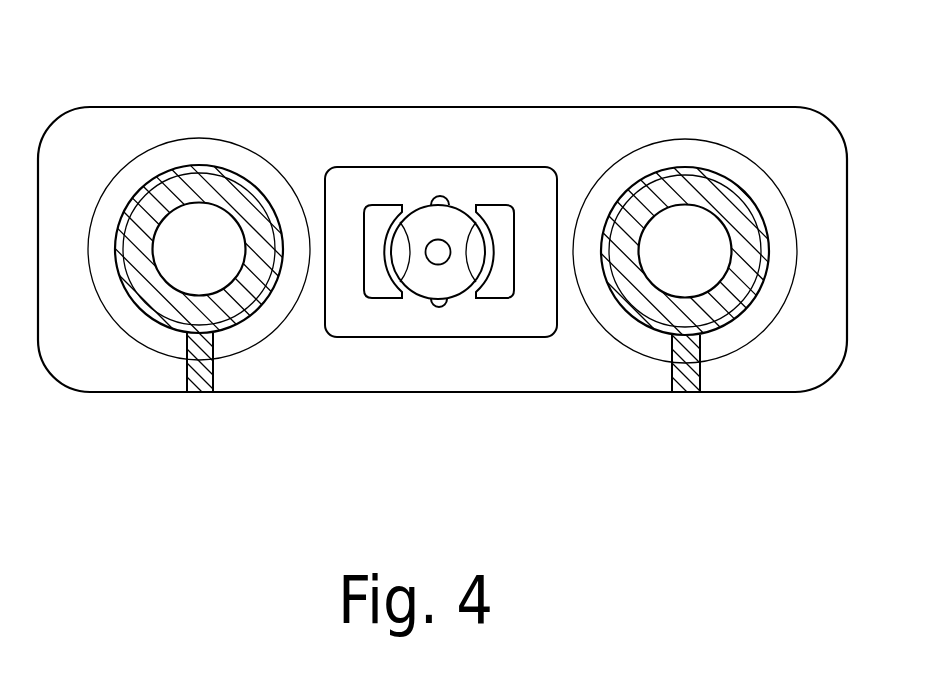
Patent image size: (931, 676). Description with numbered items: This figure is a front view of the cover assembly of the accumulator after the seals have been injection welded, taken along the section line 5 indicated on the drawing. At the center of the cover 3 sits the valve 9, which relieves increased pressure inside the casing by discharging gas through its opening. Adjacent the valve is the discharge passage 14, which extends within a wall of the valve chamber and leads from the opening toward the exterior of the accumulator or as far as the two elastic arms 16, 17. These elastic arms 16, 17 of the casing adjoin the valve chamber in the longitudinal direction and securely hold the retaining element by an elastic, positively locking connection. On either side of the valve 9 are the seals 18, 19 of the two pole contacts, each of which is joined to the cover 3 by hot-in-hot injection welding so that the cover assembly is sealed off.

The cover 3 is at (792, 353).
The section line 5- 5 is at (438, 115).
The valve 9 is at (523, 305).
The discharge passage 14 is at (440, 197).
The elastic arm 16 is at (503, 220).
The elastic arm 17 is at (383, 268).
The seal 18 is at (168, 188).
The seal 19 is at (678, 183).